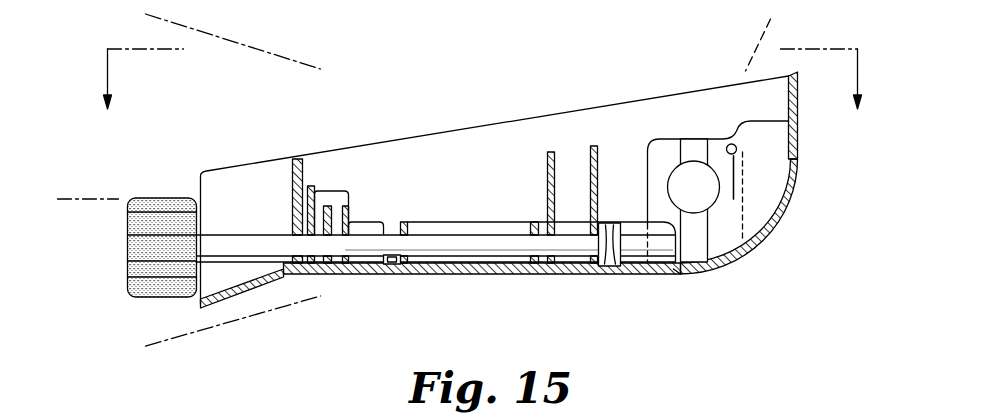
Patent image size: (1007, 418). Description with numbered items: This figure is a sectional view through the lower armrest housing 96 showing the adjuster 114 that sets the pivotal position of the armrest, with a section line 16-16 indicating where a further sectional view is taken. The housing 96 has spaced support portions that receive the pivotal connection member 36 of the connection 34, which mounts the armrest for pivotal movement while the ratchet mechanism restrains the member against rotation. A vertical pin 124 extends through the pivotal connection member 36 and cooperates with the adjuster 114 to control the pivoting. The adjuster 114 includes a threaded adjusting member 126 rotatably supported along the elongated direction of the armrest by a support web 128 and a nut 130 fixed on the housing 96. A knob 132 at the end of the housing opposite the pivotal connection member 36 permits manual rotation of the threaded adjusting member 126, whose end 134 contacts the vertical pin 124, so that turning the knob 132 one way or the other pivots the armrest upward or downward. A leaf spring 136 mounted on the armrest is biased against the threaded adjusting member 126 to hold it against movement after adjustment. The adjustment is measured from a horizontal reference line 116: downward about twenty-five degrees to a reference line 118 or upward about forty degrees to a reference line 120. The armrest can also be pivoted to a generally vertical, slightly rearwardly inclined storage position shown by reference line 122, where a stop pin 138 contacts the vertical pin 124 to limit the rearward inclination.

The section line 16- 16 is at (483, 65).
The connection 34 is at (722, 199).
The pivotal connection member 36 is at (693, 188).
The armrest housing 96 is at (471, 272).
The adjuster 114 is at (472, 219).
The horizontal reference line 116 is at (110, 200).
The reference line 118 is at (227, 323).
The reference line 120 is at (313, 63).
The reference line 122 is at (745, 68).
The vertical pin 124 is at (710, 240).
The threaded adjusting member 126 is at (503, 224).
The support web 128 is at (303, 180).
The nut 130 is at (610, 246).
The knob 132 is at (158, 298).
The end of threaded adjustment member 134 is at (673, 272).
The leaf spring 136 is at (390, 268).
The stop pin 138 is at (737, 151).